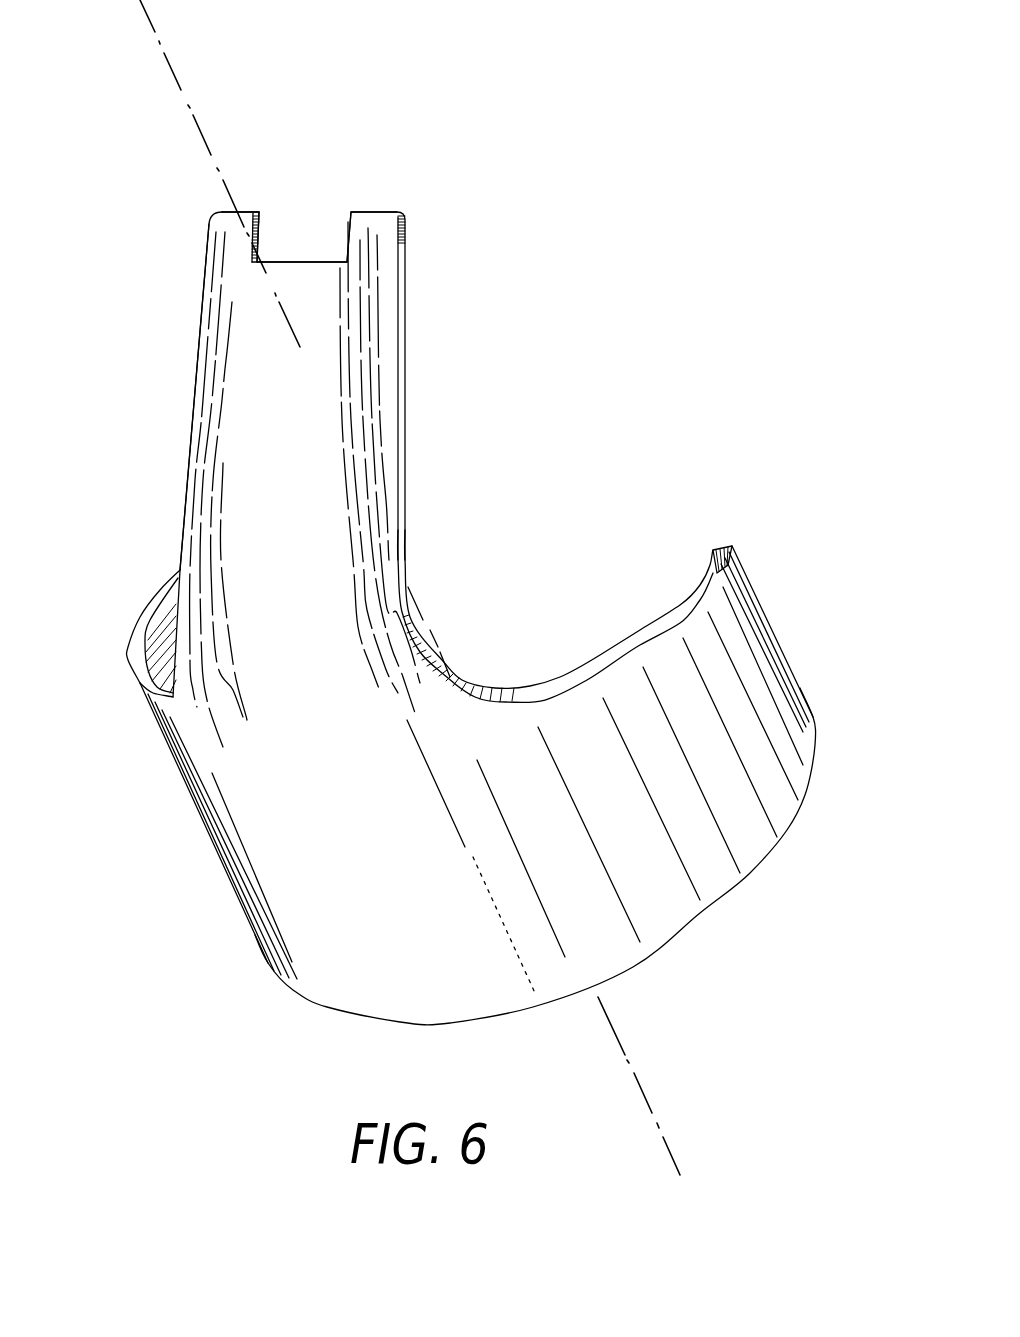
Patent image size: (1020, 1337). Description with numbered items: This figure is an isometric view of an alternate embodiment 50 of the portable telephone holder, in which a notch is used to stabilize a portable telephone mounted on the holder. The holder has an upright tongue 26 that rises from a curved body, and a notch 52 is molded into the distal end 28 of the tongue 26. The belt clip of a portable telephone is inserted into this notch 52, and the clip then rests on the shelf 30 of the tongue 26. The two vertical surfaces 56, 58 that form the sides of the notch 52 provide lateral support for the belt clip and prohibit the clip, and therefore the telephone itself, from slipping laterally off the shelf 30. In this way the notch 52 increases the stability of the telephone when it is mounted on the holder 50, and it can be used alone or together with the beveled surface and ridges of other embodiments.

The tongue 26 is at (405, 323).
The distal end 28 is at (230, 211).
The shelf 30 is at (263, 358).
The portable telephone holder 50 is at (182, 852).
The notch 52 is at (316, 262).
The vertical surface 56 is at (260, 235).
The vertical surface 58 is at (351, 226).